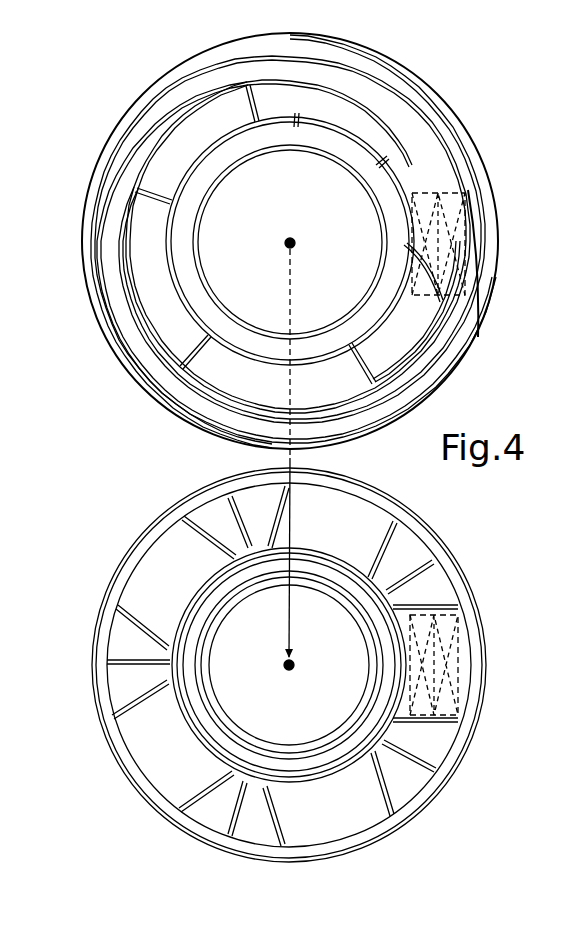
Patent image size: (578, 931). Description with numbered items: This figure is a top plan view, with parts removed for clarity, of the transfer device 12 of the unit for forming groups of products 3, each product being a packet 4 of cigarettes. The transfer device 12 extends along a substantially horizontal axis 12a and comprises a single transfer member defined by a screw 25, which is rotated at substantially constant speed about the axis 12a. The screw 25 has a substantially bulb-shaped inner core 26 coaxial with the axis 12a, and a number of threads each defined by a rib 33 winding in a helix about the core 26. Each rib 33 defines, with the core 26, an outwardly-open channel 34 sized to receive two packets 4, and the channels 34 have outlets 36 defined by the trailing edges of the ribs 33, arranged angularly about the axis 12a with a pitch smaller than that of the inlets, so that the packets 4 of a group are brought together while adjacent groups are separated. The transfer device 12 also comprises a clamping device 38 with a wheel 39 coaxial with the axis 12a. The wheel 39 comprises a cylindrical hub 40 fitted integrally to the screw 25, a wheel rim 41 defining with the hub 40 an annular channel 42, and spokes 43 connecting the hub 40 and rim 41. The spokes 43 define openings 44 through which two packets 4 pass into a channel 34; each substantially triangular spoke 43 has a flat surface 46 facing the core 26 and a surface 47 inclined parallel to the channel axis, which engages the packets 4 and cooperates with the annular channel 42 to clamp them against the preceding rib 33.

The product 3 is at (478, 233).
The packet of cigarettes 4 is at (458, 262).
The transfer device 12 is at (485, 328).
The axis 12a is at (295, 241).
The screw 25 is at (446, 97).
The inner core 26 is at (235, 332).
The rib 33 is at (410, 167).
The channel 34 is at (119, 193).
The outlet 36 is at (203, 357).
The clamping device 38 is at (458, 548).
The wheel 39 is at (436, 527).
The cylindrical hub 40 is at (223, 748).
The wheel rim 41 is at (130, 555).
The annular channel 42 is at (147, 734).
The spoke 43 is at (110, 668).
The opening 44 is at (205, 789).
The flat surface 46 is at (132, 688).
The inclined surface 47 is at (128, 642).